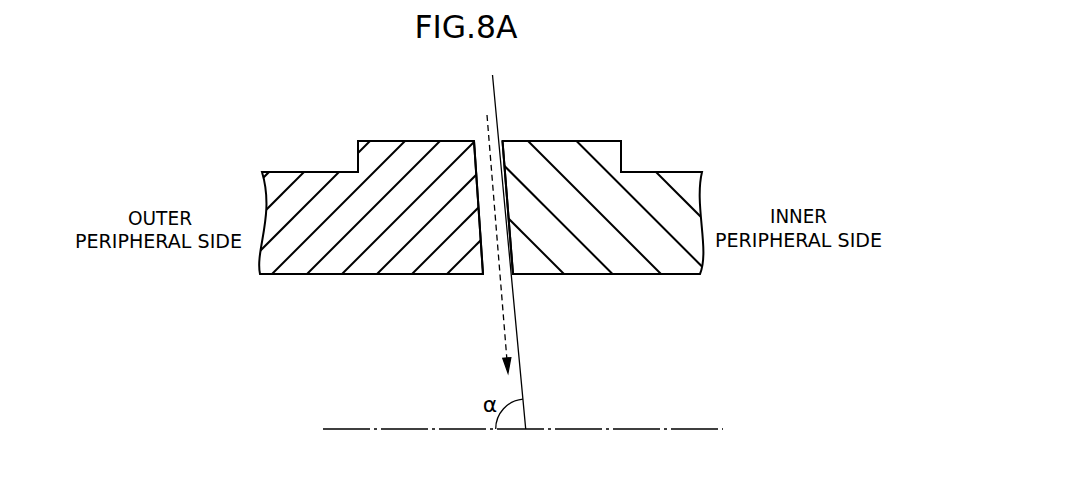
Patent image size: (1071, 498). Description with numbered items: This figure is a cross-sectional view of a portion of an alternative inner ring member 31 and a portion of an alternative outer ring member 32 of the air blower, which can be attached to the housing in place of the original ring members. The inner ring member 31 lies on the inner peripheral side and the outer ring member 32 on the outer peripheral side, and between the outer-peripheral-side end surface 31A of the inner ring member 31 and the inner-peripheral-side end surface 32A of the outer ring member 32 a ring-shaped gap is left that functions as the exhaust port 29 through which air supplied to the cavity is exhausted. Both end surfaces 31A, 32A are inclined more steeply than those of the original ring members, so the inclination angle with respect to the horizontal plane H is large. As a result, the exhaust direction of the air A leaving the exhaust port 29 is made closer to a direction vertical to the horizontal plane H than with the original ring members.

The outer ring member 32 is at (397, 275).
The inner ring member 31 is at (622, 274).
The inner-peripheral-side end surface 32A is at (480, 141).
The outer-peripheral-side end surface 31A is at (499, 165).
The exhaust port 29 is at (490, 275).
The air A is at (502, 328).
The horizontal plane H is at (697, 429).